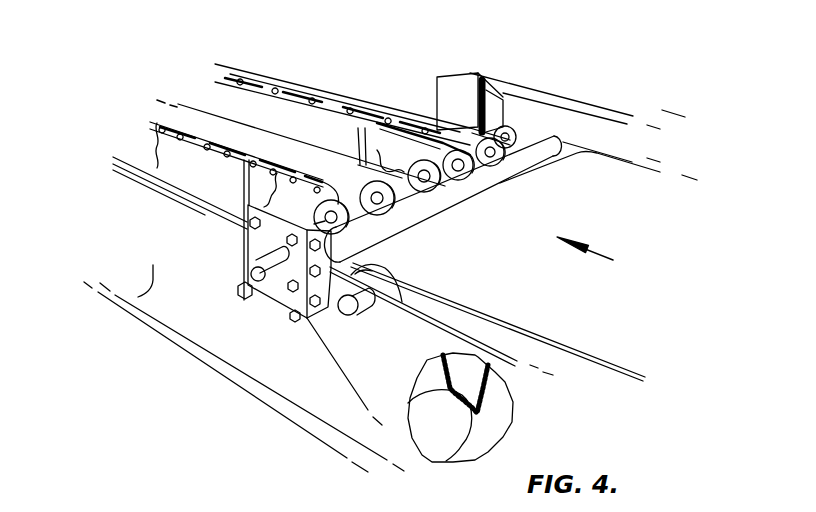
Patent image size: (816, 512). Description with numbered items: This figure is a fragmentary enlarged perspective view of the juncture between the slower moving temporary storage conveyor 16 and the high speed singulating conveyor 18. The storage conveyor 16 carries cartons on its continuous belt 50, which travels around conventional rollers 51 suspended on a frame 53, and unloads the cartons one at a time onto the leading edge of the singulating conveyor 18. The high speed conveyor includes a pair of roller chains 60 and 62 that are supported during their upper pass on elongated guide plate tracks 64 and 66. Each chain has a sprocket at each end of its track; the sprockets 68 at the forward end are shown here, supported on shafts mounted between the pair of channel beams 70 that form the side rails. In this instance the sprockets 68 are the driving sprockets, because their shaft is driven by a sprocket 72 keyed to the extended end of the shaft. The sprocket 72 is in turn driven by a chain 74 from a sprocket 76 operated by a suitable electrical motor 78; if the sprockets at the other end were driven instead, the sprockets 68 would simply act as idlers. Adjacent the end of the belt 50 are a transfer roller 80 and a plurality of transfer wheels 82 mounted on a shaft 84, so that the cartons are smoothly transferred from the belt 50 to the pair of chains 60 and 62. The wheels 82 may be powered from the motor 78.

The temporary storage conveyor 16 is at (626, 199).
The high speed singulating conveyor 18 is at (322, 88).
The continuous belt 50 is at (652, 205).
The rollers 51 is at (307, 319).
The frame 53 is at (360, 340).
The roller chain 60 is at (245, 75).
The roller chain 62 is at (178, 132).
The guide plate track 64 is at (305, 128).
The guide plate track 66 is at (200, 168).
The sprockets 68 is at (404, 160).
The channel beams 70 is at (150, 296).
The sprocket 72 is at (502, 132).
The chain 74 is at (492, 130).
The sprocket 76 is at (478, 412).
The electrical motor 78 is at (438, 435).
The transfer roller 80 is at (580, 143).
The transfer wheels 82 is at (547, 150).
The shaft 84 is at (248, 263).